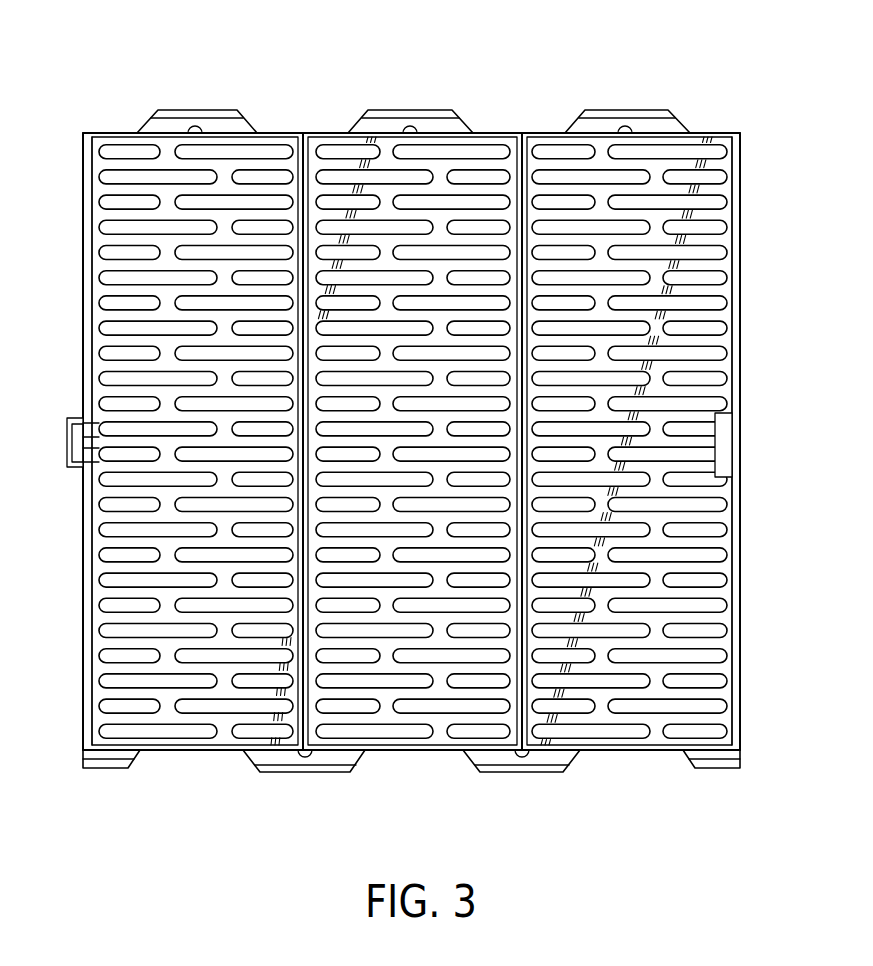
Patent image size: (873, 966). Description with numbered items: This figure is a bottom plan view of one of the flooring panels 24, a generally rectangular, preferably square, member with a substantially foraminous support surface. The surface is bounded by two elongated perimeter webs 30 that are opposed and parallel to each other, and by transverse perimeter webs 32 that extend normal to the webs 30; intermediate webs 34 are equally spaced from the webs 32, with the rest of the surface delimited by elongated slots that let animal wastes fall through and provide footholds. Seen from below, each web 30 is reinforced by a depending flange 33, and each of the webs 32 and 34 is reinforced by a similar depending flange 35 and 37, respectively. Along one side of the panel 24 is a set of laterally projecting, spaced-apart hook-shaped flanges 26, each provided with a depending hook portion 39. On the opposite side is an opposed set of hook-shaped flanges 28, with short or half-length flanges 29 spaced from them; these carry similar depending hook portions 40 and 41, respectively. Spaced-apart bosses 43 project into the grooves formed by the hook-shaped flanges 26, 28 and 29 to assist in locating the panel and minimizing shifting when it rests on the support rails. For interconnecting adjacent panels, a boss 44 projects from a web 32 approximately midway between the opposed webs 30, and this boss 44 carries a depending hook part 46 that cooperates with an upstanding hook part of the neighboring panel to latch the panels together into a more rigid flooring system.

The panel 24 is at (505, 108).
The hook-shaped flanges 26 is at (215, 110).
The hook shaped flanges 28 is at (243, 760).
The half length flanges 29 is at (138, 762).
The perimeter webs 30 is at (305, 133).
The transverse perimeter webs 32 is at (745, 530).
The depending flange 33 is at (533, 133).
The intermediate webs 34 is at (395, 752).
The depending flange 35 is at (742, 352).
The depending flange 37 is at (308, 697).
The depending hook portion 39 is at (160, 112).
The depending hook portion 40 is at (348, 770).
The depending hook portion 41 is at (110, 769).
The bosses 43 is at (192, 121).
The boss 44 is at (70, 418).
The depending hook part 46 is at (68, 460).